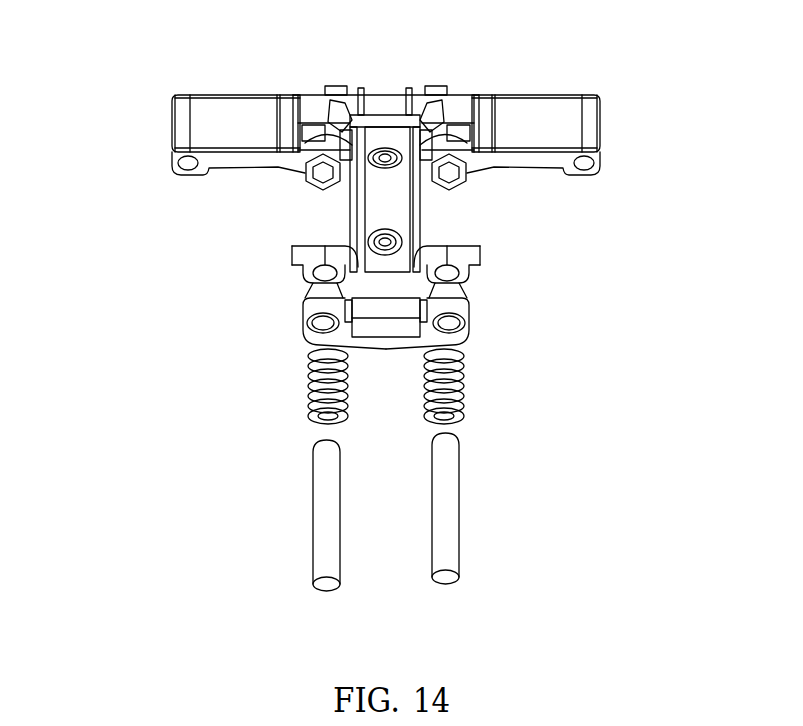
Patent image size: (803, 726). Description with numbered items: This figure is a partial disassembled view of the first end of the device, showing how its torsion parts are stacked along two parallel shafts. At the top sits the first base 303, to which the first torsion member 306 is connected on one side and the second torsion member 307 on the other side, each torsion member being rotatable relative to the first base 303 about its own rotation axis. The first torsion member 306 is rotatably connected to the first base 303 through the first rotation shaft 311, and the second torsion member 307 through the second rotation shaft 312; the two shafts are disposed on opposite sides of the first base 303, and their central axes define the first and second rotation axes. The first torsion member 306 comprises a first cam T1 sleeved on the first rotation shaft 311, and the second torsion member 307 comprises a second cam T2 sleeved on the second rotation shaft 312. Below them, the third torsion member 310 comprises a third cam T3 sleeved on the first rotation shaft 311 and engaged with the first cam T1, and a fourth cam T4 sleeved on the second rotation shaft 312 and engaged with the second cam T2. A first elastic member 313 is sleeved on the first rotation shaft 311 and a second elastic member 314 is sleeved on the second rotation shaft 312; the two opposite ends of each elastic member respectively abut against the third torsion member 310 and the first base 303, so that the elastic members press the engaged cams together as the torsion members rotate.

The first base 303 is at (388, 93).
The first torsion member 306 is at (170, 101).
The second torsion member 307 is at (603, 102).
The third torsion member 310 is at (381, 354).
The first rotation shaft 311 is at (312, 527).
The second rotation shaft 312 is at (460, 517).
The first elastic member 313 is at (305, 385).
The second elastic member 314 is at (468, 381).
The first cam T1 is at (308, 188).
The second cam T2 is at (466, 189).
The third cam T3 is at (305, 295).
The fourth cam T4 is at (468, 300).